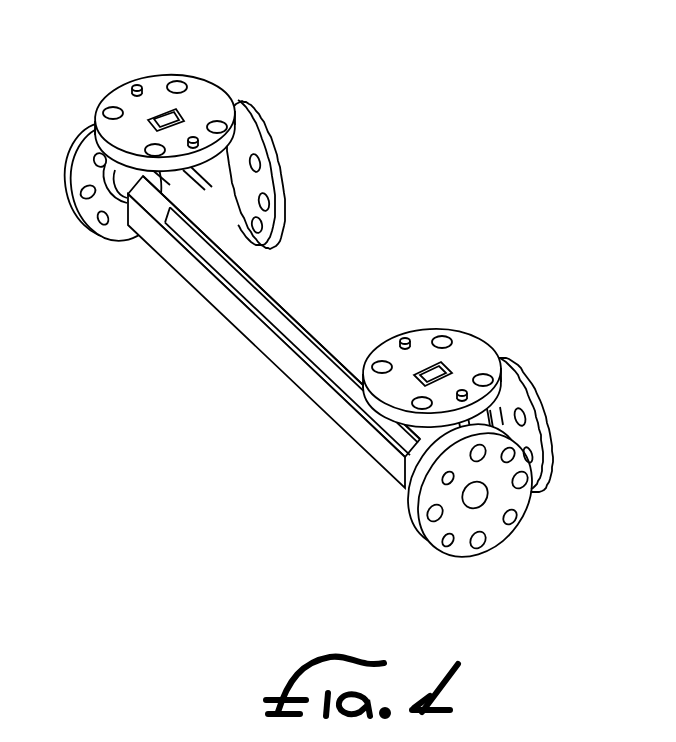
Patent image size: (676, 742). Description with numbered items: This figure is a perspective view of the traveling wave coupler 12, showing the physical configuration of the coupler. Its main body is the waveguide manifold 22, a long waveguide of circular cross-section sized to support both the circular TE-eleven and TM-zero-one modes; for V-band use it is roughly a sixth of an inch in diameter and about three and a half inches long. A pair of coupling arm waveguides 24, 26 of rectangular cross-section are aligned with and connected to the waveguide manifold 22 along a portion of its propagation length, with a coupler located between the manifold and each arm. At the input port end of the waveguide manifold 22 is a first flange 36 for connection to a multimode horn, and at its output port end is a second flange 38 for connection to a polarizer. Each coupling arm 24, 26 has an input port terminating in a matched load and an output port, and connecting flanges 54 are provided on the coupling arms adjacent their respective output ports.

The traveling wave coupler 12 is at (167, 517).
The waveguide manifold 22 is at (274, 332).
The coupling arm waveguide 24 is at (328, 290).
The coupling arm waveguide 26 is at (268, 274).
The first flange 36 is at (66, 194).
The second flange 38 is at (421, 537).
The connecting flange 54 is at (193, 77).